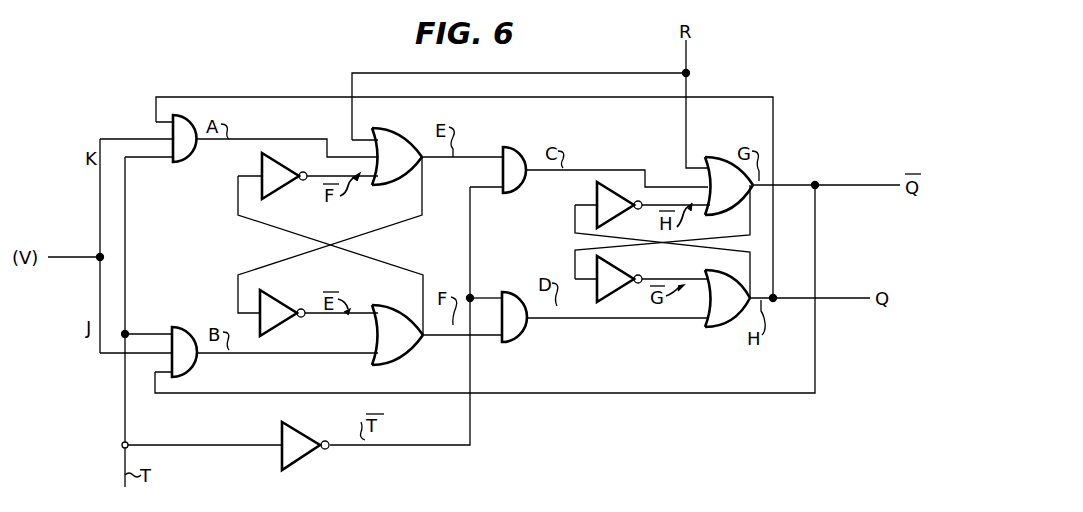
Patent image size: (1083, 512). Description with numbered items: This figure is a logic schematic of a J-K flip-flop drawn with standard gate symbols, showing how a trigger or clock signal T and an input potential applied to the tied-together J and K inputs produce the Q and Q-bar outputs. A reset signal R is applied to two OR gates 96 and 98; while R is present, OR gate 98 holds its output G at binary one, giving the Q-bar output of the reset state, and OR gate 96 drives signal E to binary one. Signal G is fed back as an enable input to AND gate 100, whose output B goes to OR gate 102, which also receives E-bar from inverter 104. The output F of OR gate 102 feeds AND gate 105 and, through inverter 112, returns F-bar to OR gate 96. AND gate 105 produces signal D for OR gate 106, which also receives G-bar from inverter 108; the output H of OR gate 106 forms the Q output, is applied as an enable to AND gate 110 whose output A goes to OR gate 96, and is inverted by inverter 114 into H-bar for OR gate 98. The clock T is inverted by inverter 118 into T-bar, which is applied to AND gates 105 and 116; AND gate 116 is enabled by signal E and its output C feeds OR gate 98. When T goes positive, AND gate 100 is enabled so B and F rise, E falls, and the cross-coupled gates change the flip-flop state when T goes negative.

The OR gate 96 is at (393, 142).
The OR gate 98 is at (717, 170).
The AND gate 100 is at (180, 338).
The OR gate 102 is at (386, 315).
The inverter 104 is at (340, 287).
The AND gate 105 is at (513, 300).
The OR gate 106 is at (702, 325).
The inverter 108 is at (627, 272).
The AND gate 110 is at (183, 145).
The inverter 112 is at (276, 166).
The inverter 114 is at (614, 195).
The AND gate 116 is at (514, 161).
The inverter 118 is at (306, 442).